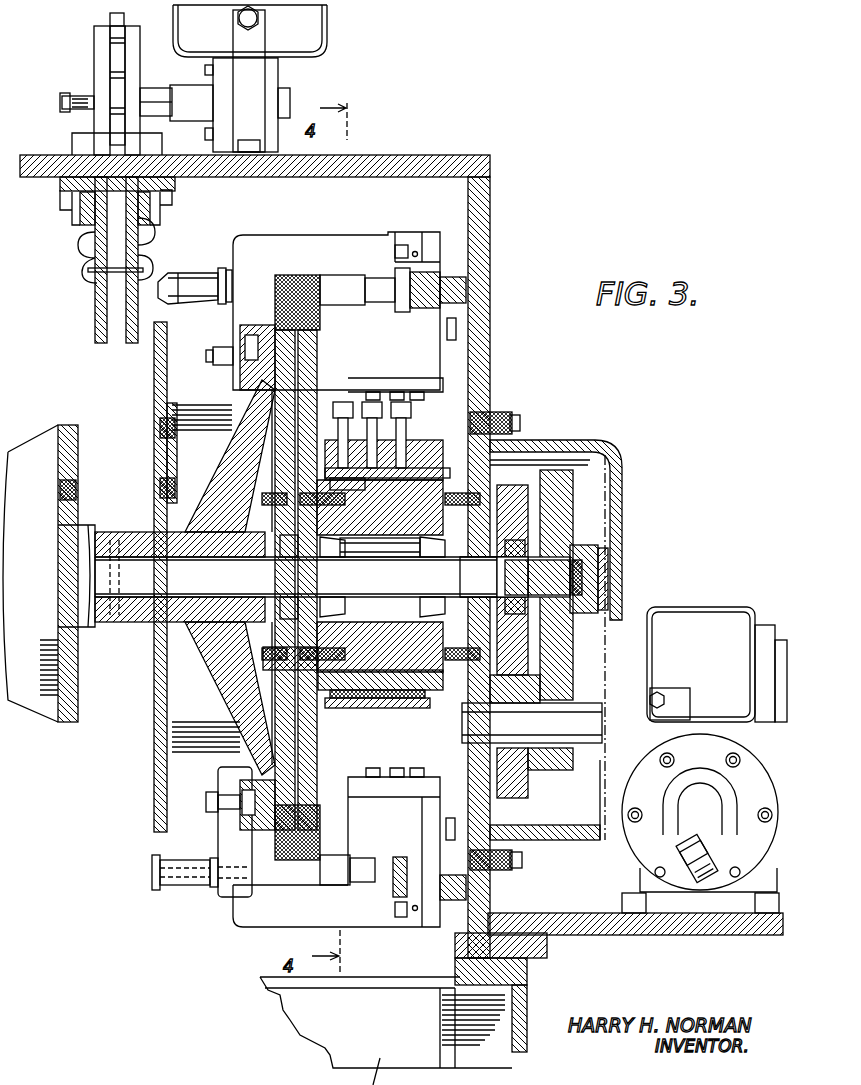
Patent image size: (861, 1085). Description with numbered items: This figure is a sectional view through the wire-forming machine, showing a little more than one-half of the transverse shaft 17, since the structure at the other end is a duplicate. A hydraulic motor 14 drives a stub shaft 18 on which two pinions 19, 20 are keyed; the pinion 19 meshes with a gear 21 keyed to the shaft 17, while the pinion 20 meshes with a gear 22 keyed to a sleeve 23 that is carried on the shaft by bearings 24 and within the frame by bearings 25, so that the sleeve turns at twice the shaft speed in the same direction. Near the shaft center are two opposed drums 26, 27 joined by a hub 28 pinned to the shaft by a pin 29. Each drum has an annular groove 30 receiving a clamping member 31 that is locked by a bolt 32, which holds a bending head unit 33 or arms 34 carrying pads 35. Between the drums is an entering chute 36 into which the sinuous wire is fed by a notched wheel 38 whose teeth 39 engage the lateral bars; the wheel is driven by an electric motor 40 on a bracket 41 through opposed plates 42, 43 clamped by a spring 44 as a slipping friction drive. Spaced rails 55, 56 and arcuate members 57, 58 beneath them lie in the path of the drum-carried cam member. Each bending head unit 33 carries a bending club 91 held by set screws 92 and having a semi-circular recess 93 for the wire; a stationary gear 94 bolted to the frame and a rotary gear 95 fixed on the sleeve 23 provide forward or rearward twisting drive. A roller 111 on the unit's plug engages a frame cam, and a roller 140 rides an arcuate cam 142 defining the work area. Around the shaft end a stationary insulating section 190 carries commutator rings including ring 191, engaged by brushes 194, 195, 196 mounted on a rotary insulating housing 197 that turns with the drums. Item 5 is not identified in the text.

The U-bolt clamp 5 is at (82, 248).
The hydraulic motor 14 is at (645, 838).
The shaft 17 is at (332, 577).
The stub shaft 18 is at (592, 745).
The pinion 19 is at (555, 770).
The pinion 20 is at (520, 785).
The gear 21 is at (565, 475).
The gear 22 is at (512, 490).
The sleeve 23 is at (382, 548).
The bearings 24 is at (290, 548).
The bearings 25 is at (327, 545).
The drum 26 is at (208, 495).
The drum 27 is at (20, 488).
The hub 28 is at (133, 533).
The pin 29 is at (118, 602).
The annular groove 30 is at (250, 345).
The clamping member 31 is at (248, 366).
The bolt 32 is at (213, 355).
The bending head unit 33 is at (341, 227).
The arm 34 is at (232, 840).
The pad 35 is at (155, 873).
The entering guide or chute 36 is at (72, 135).
The notched wheel 38 is at (110, 15).
The teeth 39 is at (115, 40).
The electric motor 40 is at (315, 25).
The bracket 41 is at (262, 75).
The plate 42 is at (140, 72).
The plate 43 is at (100, 60).
The spring 44 is at (92, 100).
The rail 55 is at (95, 285).
The rail 56 is at (135, 282).
The arcuate member 57 is at (97, 328).
The arcuate member 58 is at (131, 345).
The bending club 91 is at (203, 280).
The set screws 92 is at (380, 576).
The semi-circular recess 93 is at (352, 480).
The stationary gear 94 is at (312, 355).
The rotary gear 95 is at (290, 730).
The roller 111 is at (470, 290).
The roller 140 is at (456, 330).
The arcuate cam 142 is at (440, 842).
The section of insulating material 190 is at (390, 690).
The commutator ring 191 is at (410, 480).
The brush 194 is at (410, 462).
The brush 195 is at (395, 440).
The brush 196 is at (279, 394).
The rotary insulating housing 197 is at (416, 708).